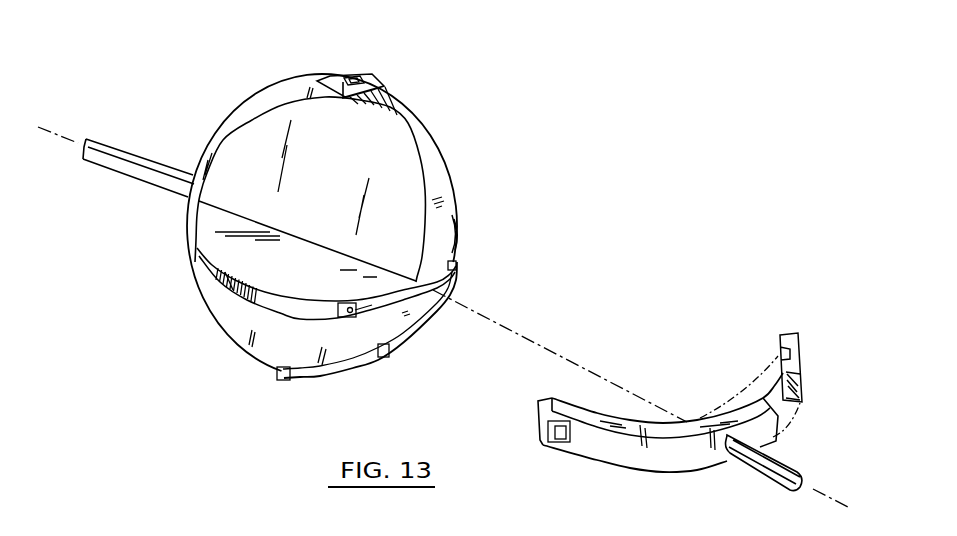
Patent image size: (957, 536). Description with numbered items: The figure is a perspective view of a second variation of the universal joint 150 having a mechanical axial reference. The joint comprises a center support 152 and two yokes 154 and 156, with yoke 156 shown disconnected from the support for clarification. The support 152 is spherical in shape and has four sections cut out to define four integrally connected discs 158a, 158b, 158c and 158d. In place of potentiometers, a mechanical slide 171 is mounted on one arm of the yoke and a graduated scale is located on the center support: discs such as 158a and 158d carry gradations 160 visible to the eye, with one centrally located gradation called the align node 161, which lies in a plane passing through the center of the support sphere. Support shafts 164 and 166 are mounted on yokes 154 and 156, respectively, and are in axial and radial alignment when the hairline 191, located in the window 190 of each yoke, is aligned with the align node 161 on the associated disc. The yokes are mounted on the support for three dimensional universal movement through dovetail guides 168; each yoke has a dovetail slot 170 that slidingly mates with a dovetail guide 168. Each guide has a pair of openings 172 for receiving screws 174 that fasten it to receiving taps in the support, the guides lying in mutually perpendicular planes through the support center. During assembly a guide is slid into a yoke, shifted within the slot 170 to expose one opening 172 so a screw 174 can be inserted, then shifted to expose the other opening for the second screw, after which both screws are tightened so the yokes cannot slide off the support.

The universal joint 150 is at (465, 99).
The center support 152 is at (273, 149).
The yoke 154 is at (189, 206).
The yoke 156 is at (740, 414).
The disc 158a is at (197, 255).
The disc 158b is at (405, 315).
The disc 158c is at (458, 238).
The disc 158d is at (432, 158).
The gradations 160 is at (392, 107).
The align node 161 is at (230, 292).
The support shaft 164 is at (132, 150).
The support shaft 166 is at (780, 449).
The dovetail guide 168 is at (432, 287).
The dovetail slot 170 is at (378, 88).
The mechanical slide 171 is at (549, 448).
The opening 172 is at (350, 304).
The screw 174 is at (456, 268).
The window 190 is at (347, 74).
The hairline 191 is at (352, 78).